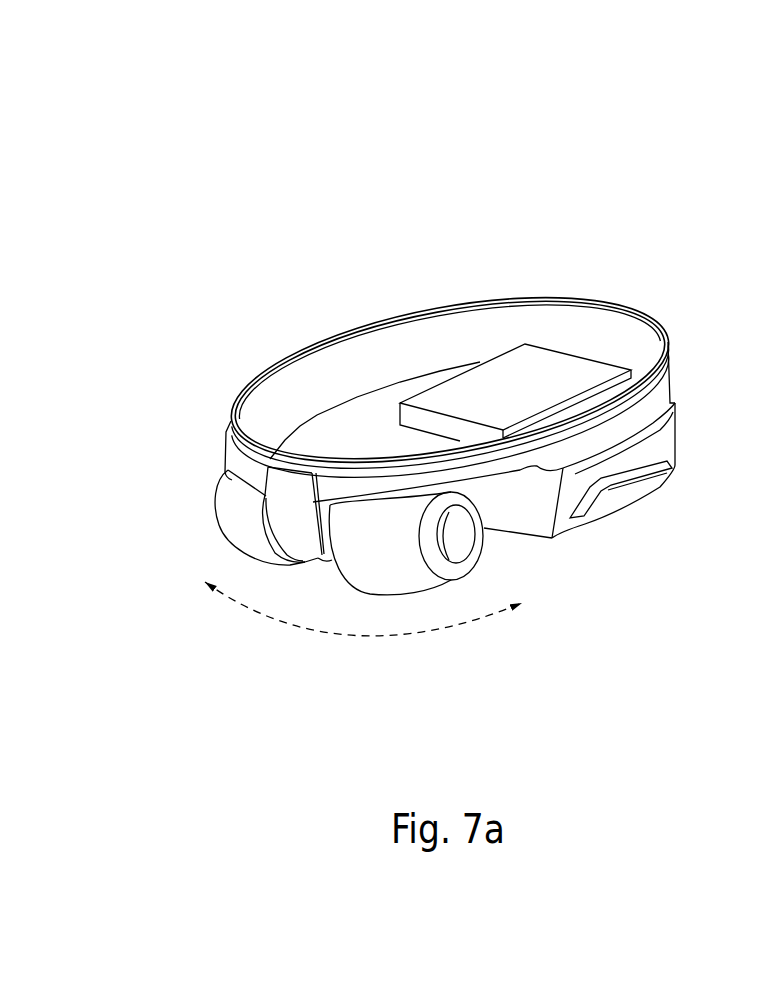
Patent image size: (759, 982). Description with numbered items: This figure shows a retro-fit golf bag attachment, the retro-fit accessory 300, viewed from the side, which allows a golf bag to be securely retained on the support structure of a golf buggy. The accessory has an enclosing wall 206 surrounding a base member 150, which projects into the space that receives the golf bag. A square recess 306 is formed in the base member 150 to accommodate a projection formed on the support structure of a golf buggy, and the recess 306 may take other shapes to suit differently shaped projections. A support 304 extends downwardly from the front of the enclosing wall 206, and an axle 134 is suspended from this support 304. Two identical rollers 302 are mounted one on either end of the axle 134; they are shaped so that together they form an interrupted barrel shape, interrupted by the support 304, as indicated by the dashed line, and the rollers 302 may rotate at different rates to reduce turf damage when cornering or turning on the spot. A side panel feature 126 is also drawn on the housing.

The retro-fit accessory 300 is at (233, 195).
The base member 150 is at (353, 430).
The enclosing wall 206 is at (656, 326).
The recess 306 is at (542, 372).
The side panel with slot 126 is at (667, 450).
The rollers 302 is at (237, 512).
The support 304 is at (302, 523).
The axle 134 is at (330, 530).